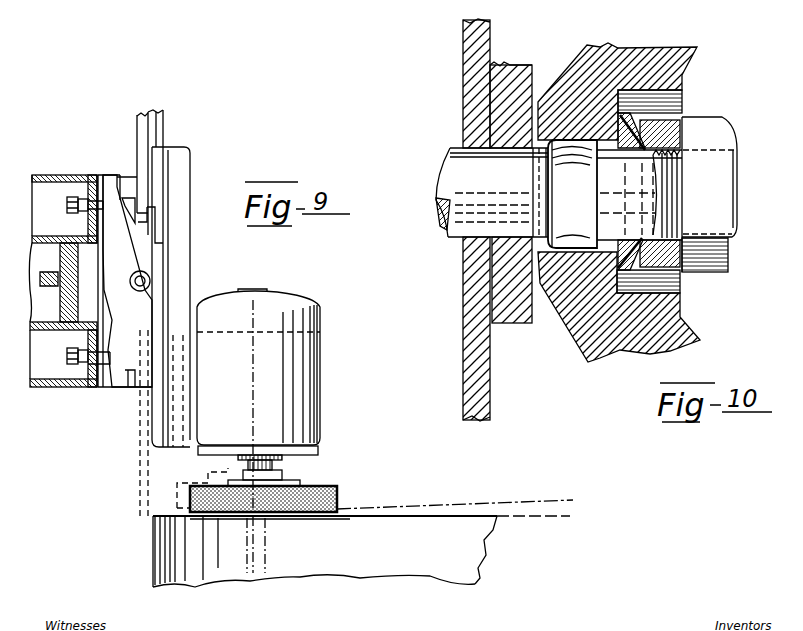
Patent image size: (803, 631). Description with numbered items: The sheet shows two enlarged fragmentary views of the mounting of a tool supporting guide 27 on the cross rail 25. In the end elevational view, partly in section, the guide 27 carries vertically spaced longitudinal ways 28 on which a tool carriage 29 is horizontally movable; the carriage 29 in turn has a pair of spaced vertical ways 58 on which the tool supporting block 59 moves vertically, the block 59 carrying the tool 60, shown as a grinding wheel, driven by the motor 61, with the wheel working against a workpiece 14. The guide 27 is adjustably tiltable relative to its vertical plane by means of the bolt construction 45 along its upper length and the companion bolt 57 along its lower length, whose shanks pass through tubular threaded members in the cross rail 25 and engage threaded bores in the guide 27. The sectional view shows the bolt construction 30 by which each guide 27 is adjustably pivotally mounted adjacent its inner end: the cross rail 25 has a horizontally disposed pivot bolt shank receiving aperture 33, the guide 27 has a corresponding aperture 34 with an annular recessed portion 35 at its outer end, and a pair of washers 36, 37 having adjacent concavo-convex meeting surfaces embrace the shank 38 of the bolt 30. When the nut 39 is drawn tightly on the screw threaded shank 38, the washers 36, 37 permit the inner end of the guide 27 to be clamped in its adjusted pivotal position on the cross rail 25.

In FIG. 9, the work table 14 is at (410, 559).
In FIG. 9, the cross rail 25 is at (42, 190).
In FIG. 10, the cross rail 25 is at (500, 77).
In FIG. 9, the guide 27 is at (132, 261).
In FIG. 10, the guide 27 is at (672, 62).
In FIG. 9, the longitudinal ways 28 is at (125, 176).
In FIG. 9, the tool carriage 29 is at (140, 127).
In FIG. 10, the bolt construction 30 is at (584, 205).
In FIG. 10, the pivot bolt shank receiving apertures 33 is at (482, 148).
In FIG. 10, the pivot bolt shank receiving aperture 34 is at (602, 145).
In FIG. 10, the annular recessed portion 35 is at (672, 115).
In FIG. 10, the washer 36 is at (680, 135).
In FIG. 10, the washer 37 is at (663, 265).
In FIG. 10, the bolt shank 38 is at (488, 192).
In FIG. 10, the nut 39 is at (716, 204).
In FIG. 9, the bolt construction 45 is at (67, 205).
In FIG. 9, the bolt 57 is at (67, 361).
In FIG. 9, the vertical ways 58 is at (157, 132).
In FIG. 9, the tool supporting block 59 is at (177, 180).
In FIG. 9, the tool 60 is at (337, 493).
In FIG. 9, the motor 61 is at (240, 388).